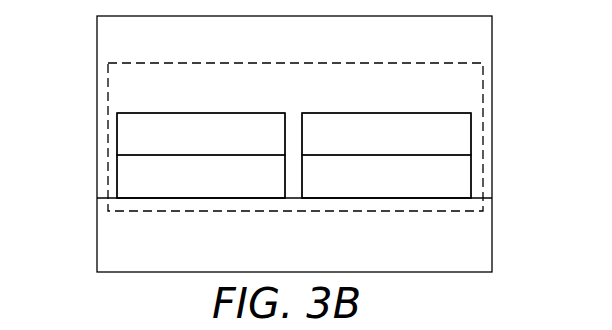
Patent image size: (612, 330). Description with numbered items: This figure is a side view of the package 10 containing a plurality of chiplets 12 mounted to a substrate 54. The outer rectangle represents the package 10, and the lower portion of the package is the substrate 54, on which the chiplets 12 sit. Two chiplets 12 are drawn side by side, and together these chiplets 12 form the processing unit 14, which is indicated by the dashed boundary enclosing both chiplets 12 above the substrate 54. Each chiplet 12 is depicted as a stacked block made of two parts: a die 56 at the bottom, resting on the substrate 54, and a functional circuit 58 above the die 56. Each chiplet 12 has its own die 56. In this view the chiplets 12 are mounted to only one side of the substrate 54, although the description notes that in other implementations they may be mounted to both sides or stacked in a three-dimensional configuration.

The package 10 is at (97, 33).
The chiplet 12 is at (108, 114).
The processing unit 14 is at (100, 83).
The substrate 54 is at (97, 237).
The die 56 is at (115, 183).
The functional circuit 58 is at (115, 138).